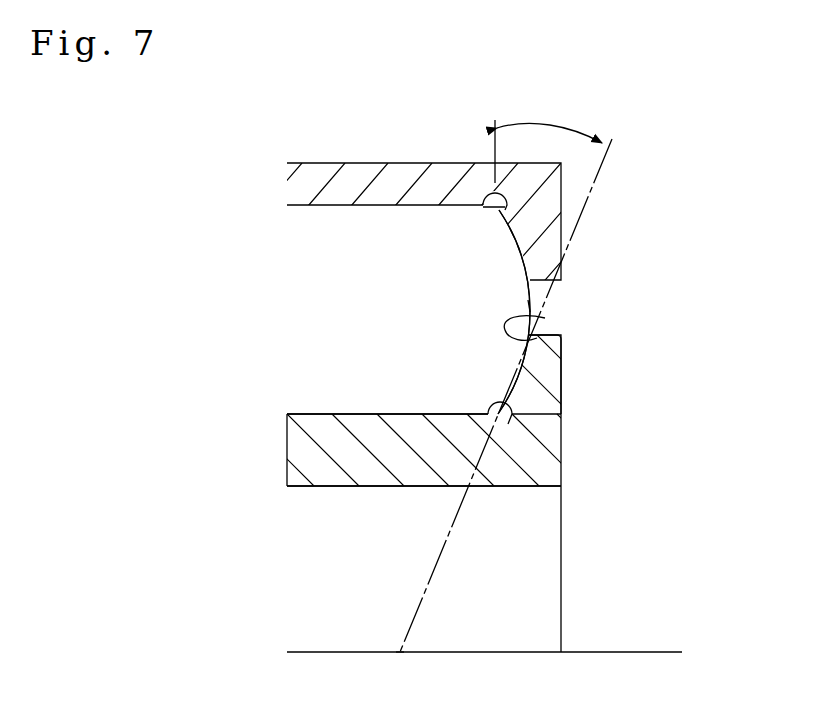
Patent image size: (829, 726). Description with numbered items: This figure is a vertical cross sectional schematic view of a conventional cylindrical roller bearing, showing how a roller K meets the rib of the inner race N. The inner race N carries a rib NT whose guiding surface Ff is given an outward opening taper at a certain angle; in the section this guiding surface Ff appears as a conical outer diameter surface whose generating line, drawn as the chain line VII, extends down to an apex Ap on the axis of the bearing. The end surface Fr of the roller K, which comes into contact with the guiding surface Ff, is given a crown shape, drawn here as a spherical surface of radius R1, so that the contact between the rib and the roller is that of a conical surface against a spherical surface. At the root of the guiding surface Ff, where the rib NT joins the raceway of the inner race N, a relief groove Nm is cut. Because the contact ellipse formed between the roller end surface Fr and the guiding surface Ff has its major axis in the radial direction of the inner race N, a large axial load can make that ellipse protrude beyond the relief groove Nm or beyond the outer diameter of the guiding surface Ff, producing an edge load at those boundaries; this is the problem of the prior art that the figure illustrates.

The cutting tool (insert) cross-section K is at (358, 234).
The radius of curved flank R1 is at (514, 252).
The end surface of the roller Fr is at (528, 302).
The guiding surface of the rib Ff is at (545, 318).
The tooth of mating part NT is at (547, 378).
The relief groove Nm is at (508, 423).
The inner race N is at (533, 588).
The apex Ap is at (384, 645).
The section line VII- VII is at (596, 176).